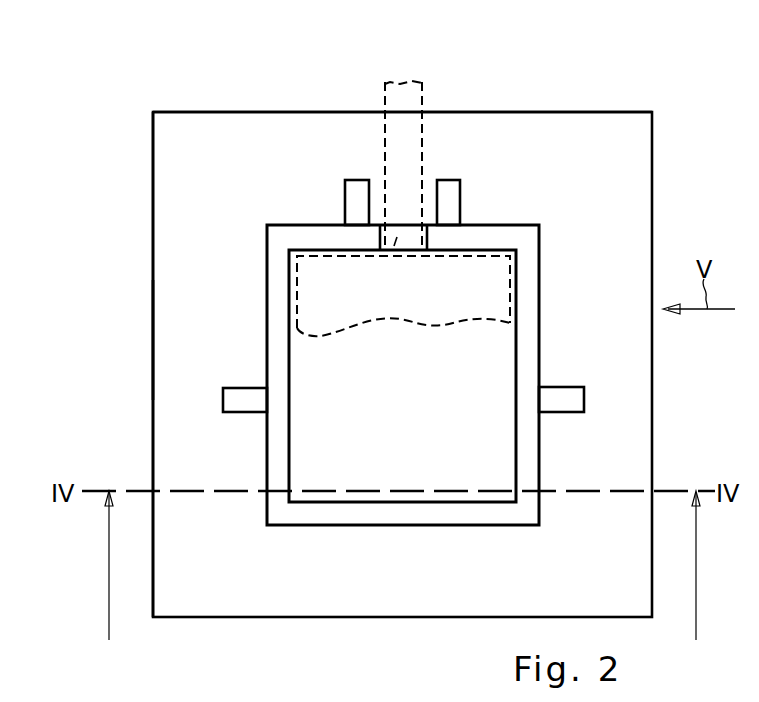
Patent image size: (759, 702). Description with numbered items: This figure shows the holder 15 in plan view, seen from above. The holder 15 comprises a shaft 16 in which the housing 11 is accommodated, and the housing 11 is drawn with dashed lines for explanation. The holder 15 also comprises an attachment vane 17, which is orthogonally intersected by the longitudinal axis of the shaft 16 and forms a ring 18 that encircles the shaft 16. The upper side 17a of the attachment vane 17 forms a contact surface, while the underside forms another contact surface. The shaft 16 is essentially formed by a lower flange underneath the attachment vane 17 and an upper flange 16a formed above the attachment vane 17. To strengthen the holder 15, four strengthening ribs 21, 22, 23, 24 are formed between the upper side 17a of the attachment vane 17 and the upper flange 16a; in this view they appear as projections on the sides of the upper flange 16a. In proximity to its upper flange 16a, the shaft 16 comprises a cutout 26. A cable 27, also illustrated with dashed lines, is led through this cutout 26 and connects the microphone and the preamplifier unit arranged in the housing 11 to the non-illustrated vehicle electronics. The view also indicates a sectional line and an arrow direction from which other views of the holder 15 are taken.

The housing 11 is at (461, 321).
The holder 15 is at (128, 193).
The shaft 16 is at (553, 260).
The upper flange 16a is at (493, 237).
The attachment vane 17 is at (170, 279).
The upper side 17a is at (217, 157).
The ring 18 is at (176, 330).
The strengthening rib 21 is at (567, 400).
The strengthening rib 22 is at (446, 188).
The strengthening rib 23 is at (358, 188).
The strengthening rib 24 is at (231, 399).
The cutout 26 is at (393, 250).
The cable 27 is at (425, 155).